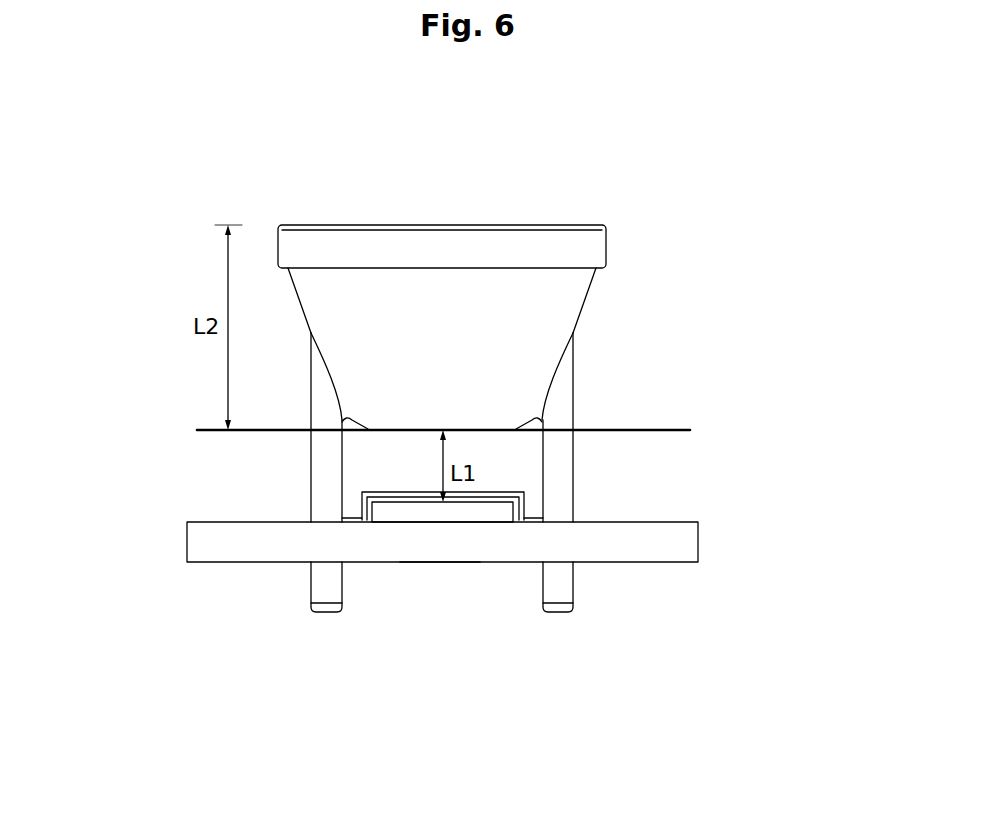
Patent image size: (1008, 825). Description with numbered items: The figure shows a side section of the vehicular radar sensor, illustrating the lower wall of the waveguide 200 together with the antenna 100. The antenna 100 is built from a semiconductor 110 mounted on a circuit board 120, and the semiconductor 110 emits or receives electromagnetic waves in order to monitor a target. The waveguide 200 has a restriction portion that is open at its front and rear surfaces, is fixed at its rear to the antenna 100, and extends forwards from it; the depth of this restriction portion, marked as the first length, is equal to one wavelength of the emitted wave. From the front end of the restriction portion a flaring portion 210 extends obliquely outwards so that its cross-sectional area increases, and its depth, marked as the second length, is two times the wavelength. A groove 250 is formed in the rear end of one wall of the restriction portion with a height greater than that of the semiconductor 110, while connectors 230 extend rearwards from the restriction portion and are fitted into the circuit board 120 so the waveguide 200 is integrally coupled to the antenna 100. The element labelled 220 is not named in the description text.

The antenna 100 is at (706, 542).
The semiconductor 110 is at (496, 510).
The circuit board 120 is at (445, 562).
The waveguide 200 is at (514, 224).
The flaring portion 210 is at (570, 297).
The reference plane 220 is at (527, 458).
The connectors 230 is at (330, 597).
The groove 250 is at (362, 497).